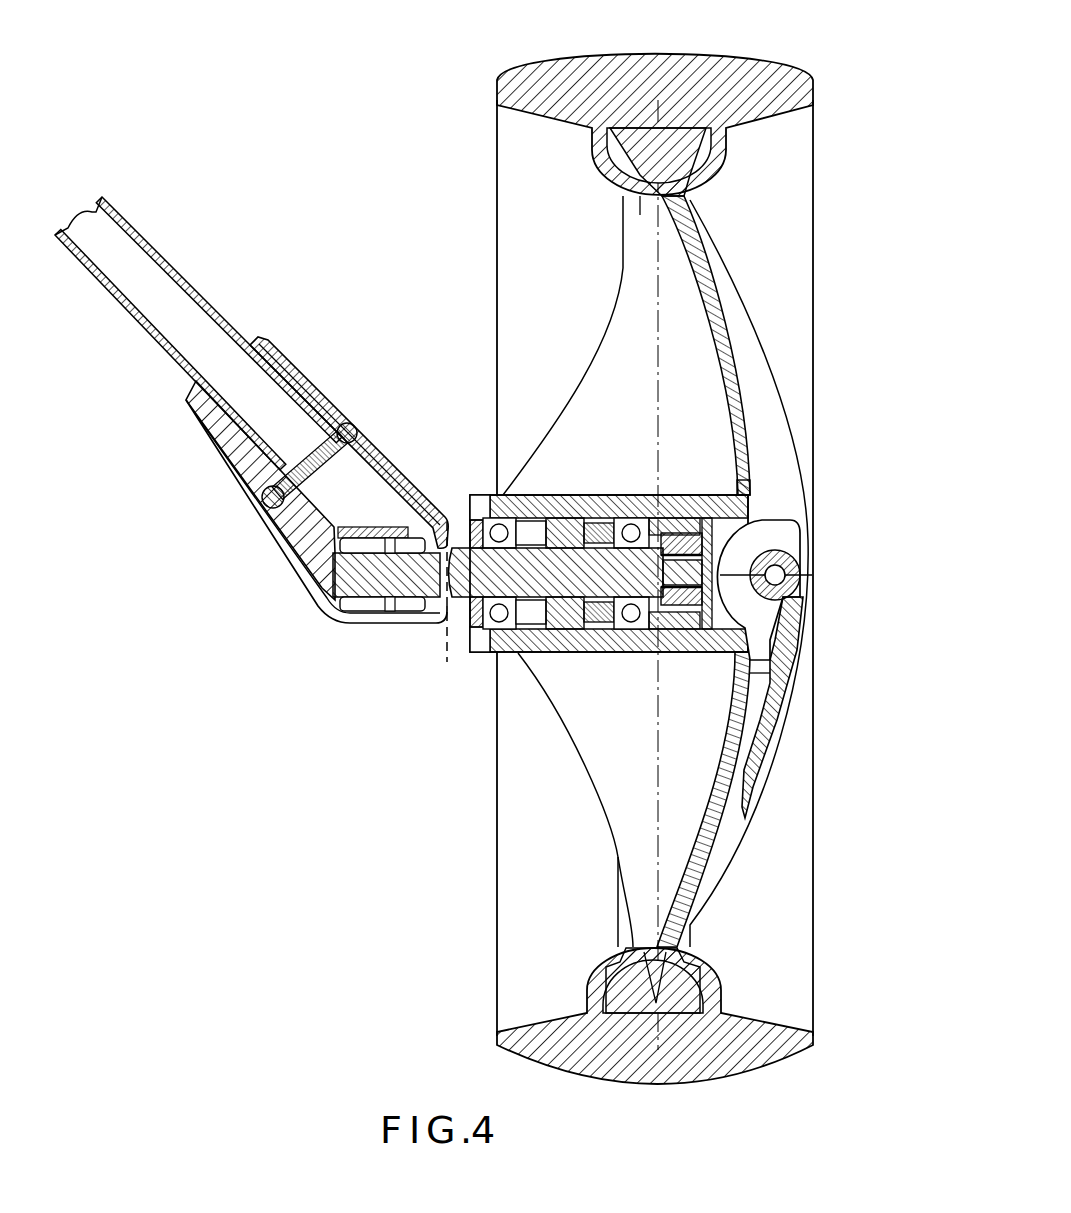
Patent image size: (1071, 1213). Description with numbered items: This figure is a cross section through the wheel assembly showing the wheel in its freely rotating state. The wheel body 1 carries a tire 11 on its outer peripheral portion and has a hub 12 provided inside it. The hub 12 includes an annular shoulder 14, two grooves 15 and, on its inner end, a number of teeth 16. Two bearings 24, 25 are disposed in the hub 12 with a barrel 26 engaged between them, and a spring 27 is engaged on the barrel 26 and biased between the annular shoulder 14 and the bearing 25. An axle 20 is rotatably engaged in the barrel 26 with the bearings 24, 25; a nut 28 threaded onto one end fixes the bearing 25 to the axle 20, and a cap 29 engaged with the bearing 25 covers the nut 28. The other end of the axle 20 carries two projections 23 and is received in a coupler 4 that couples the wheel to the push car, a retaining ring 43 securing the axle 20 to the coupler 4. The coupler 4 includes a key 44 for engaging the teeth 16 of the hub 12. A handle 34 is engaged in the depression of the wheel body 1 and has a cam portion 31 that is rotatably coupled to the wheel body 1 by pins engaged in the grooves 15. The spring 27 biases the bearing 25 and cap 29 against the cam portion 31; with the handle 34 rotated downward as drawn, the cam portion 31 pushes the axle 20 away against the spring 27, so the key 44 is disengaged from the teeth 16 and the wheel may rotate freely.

The wheel body 1 is at (745, 372).
The coupler 4 is at (318, 396).
The tire 11 is at (740, 78).
The hub 12 is at (685, 497).
The annular shoulder 14 is at (583, 523).
The grooves 15 is at (752, 504).
The teeth 16 is at (478, 500).
The axle 20 is at (553, 515).
The projections 23 is at (468, 550).
The bearing 24 is at (505, 498).
The bearing 25 is at (632, 500).
The barrel 26 is at (552, 652).
The spring 27 is at (595, 652).
The nut 28 is at (668, 640).
The cap 29 is at (707, 640).
The cam portion 31 is at (738, 550).
The handle 34 is at (783, 713).
The retaining ring 43 is at (380, 608).
The key 44 is at (445, 606).